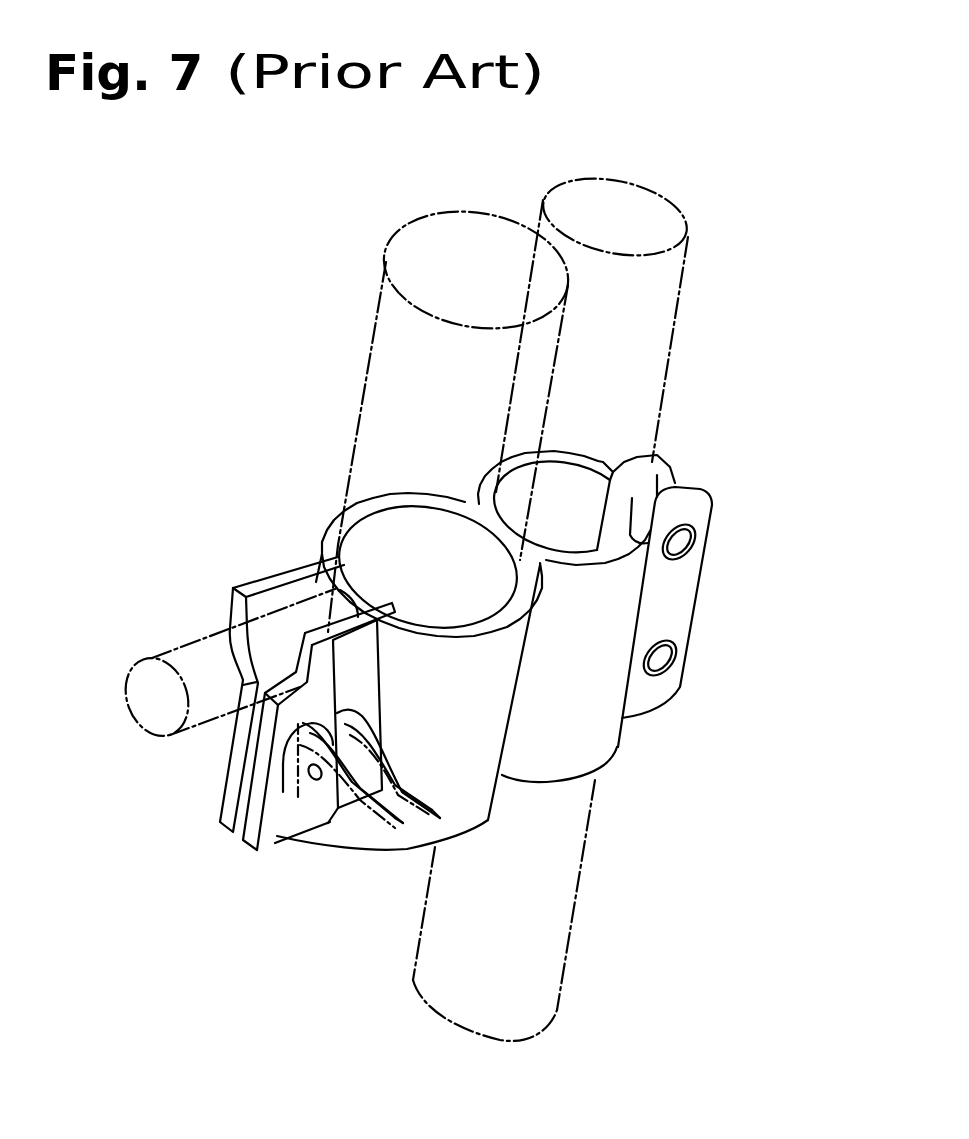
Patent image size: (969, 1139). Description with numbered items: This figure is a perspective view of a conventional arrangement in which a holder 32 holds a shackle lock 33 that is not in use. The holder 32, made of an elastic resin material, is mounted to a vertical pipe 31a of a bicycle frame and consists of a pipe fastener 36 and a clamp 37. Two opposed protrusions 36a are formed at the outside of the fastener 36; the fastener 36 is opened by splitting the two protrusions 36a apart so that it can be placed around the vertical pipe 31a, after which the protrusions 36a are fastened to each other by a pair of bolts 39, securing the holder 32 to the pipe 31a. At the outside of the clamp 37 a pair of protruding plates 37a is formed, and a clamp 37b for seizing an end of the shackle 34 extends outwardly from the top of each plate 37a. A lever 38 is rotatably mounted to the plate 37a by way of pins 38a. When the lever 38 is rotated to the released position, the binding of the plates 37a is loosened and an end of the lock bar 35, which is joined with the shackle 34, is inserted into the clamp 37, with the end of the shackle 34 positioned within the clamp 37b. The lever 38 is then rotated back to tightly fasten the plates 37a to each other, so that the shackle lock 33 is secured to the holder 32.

The vertical pipe 31a is at (688, 275).
The holder 32 is at (713, 603).
The shackle lock 33 is at (385, 305).
The shackle 34 is at (170, 650).
The lock bar 35 is at (385, 400).
The pipe fastener 36 is at (607, 745).
The protrusions 36a is at (688, 486).
The clamp 37 is at (478, 812).
The protruding plates 37a is at (236, 760).
The clamp 37b is at (320, 637).
The lever 38 is at (367, 697).
The pins 38a is at (312, 781).
The bolts 39 is at (692, 545).